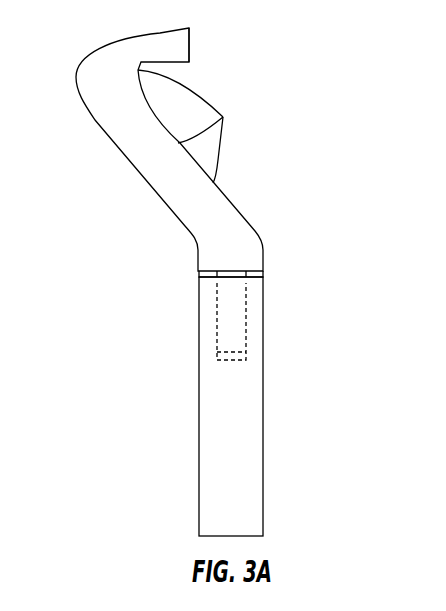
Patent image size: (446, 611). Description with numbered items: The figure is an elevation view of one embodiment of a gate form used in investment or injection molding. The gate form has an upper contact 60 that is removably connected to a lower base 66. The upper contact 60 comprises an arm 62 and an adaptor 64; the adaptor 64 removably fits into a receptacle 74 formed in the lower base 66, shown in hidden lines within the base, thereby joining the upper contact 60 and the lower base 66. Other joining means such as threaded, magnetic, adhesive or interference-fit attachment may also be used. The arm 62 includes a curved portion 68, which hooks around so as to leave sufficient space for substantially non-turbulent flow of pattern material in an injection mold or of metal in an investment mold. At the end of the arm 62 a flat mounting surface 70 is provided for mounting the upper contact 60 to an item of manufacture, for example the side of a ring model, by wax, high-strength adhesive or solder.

The upper contact 60 is at (128, 160).
The arm 62 is at (218, 220).
The adaptor 64 is at (247, 312).
The lower base 66 is at (264, 447).
The curved portion 68 is at (223, 117).
The flat mounting surface 70 is at (191, 43).
The receptacle 74 is at (225, 362).